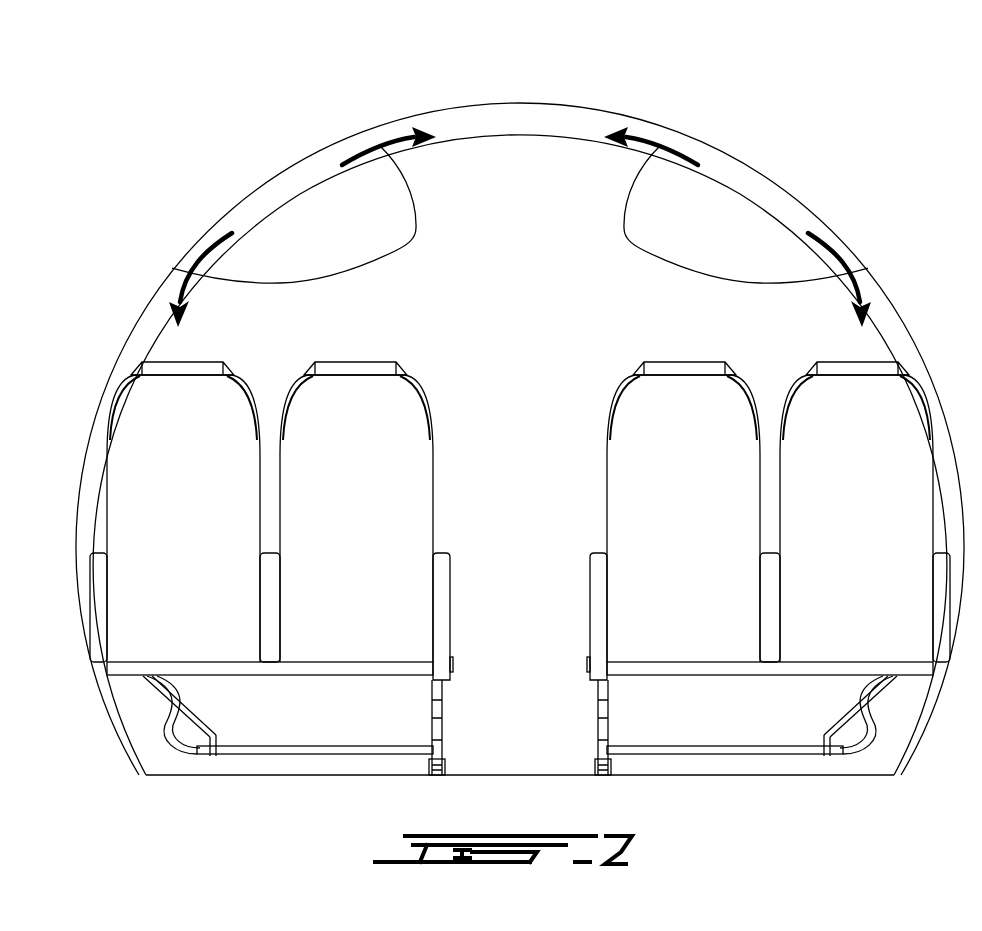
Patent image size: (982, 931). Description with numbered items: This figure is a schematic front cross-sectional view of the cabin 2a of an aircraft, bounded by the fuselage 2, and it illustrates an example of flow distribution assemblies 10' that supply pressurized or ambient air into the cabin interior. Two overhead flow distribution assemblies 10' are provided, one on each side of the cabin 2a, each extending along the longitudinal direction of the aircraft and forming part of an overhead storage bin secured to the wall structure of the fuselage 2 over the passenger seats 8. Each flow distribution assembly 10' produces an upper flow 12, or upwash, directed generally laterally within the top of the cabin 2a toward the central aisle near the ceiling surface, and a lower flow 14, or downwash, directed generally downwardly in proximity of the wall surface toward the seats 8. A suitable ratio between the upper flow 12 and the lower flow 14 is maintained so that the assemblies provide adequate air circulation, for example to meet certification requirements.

The fuselage 2 is at (783, 178).
The cabin 2a is at (518, 127).
The passenger seats 8 is at (630, 492).
The flow distribution assembly 10' is at (520, 219).
The upper flow 12 is at (392, 130).
The lower flow 14 is at (188, 280).